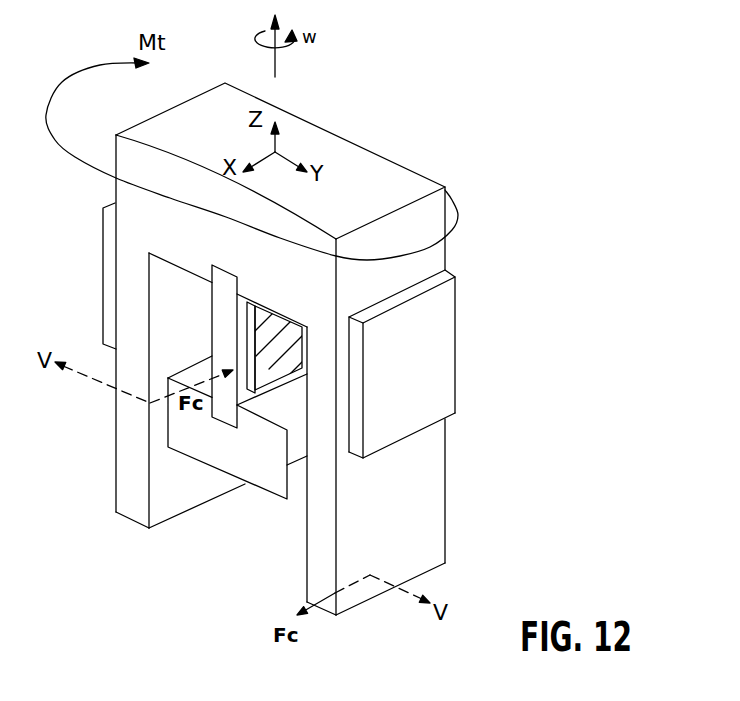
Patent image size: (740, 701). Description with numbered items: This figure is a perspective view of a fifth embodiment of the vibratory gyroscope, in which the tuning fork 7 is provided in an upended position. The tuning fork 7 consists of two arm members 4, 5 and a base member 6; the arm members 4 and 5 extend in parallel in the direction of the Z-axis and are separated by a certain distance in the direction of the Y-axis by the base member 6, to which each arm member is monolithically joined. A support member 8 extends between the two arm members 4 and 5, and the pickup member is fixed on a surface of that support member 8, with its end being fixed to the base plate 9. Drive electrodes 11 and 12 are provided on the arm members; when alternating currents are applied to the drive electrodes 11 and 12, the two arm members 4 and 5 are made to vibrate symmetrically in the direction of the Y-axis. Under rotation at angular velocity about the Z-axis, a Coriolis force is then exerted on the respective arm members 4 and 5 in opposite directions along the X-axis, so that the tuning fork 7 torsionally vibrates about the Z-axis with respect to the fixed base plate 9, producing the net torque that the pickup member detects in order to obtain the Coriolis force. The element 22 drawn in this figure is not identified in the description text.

The arm member 4 is at (405, 540).
The arm member 5 is at (123, 508).
The base member 6 is at (290, 297).
The tuning fork 7 is at (447, 465).
The support member 8 is at (227, 347).
The base plate 9 is at (293, 372).
The drive electrode 11 is at (418, 382).
The drive electrode 12 is at (103, 234).
The insert support block 22 is at (305, 492).